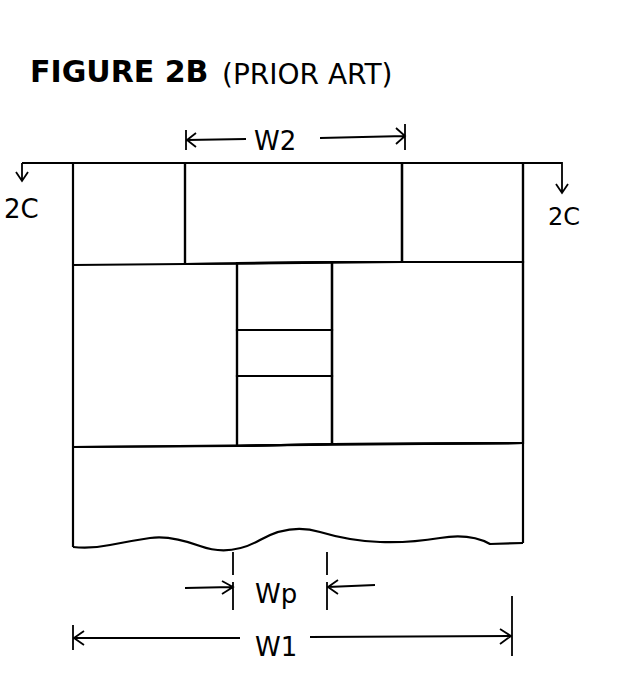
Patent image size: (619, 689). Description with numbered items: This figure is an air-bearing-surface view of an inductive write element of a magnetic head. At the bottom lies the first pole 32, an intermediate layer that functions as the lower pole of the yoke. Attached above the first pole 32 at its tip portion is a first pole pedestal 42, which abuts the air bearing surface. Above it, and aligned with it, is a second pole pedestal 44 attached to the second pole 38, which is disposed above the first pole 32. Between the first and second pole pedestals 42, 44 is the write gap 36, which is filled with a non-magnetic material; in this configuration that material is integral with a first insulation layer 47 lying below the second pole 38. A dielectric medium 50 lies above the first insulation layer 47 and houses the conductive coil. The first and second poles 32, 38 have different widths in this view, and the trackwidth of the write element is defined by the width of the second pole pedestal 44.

The first pole 32 is at (494, 522).
The write gap 36 is at (256, 357).
The second pole 38 is at (386, 205).
The first pole pedestal 42 is at (272, 424).
The second pole pedestal 44 is at (292, 313).
The first insulation layer 47 is at (494, 380).
The dielectric medium 50 is at (498, 211).